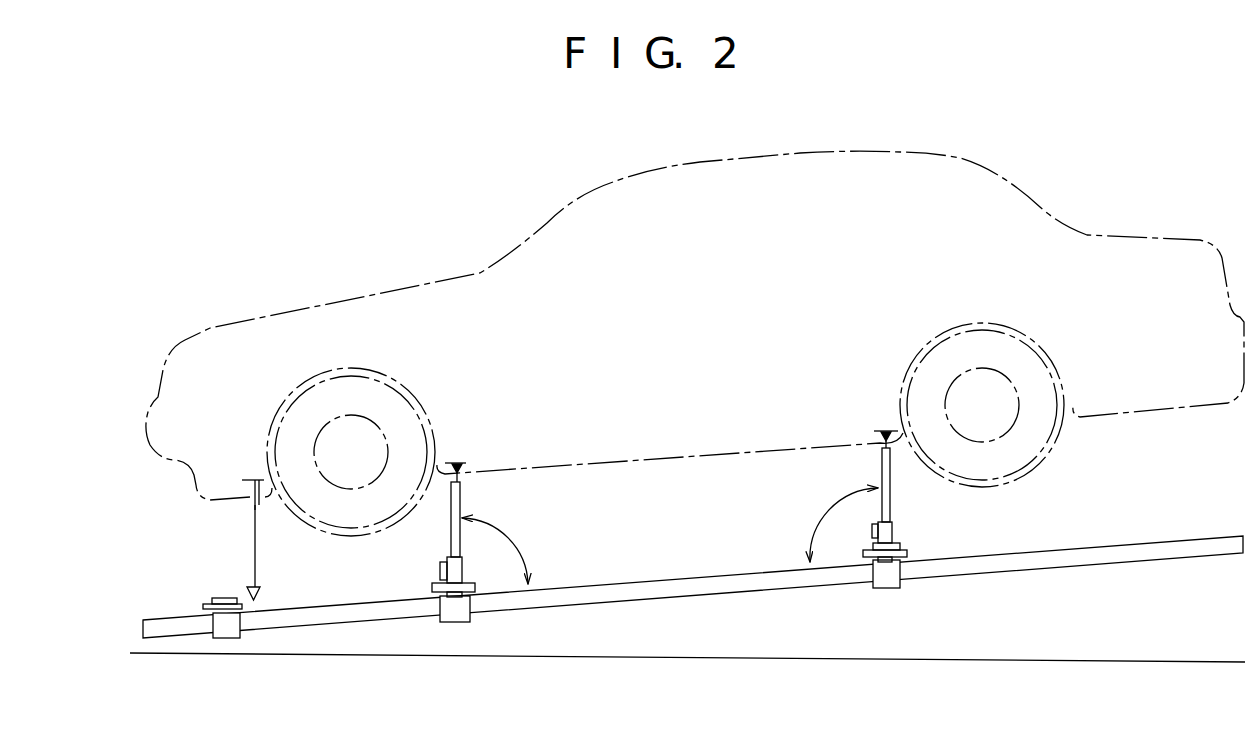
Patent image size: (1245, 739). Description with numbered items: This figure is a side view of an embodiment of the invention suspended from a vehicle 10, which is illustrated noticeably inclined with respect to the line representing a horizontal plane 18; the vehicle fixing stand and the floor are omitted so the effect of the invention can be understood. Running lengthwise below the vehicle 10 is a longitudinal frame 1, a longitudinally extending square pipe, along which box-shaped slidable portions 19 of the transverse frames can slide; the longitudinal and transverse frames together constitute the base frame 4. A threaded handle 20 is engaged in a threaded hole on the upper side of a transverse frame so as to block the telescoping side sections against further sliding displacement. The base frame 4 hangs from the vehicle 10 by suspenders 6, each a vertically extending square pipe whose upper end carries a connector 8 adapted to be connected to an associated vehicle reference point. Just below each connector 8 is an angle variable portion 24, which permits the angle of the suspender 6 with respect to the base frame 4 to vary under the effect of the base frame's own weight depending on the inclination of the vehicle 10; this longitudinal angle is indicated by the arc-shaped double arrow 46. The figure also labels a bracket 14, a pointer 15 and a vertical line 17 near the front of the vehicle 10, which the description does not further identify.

The longitudinal frame 1 is at (1173, 546).
The base frame 4 is at (482, 619).
The suspender 6 is at (449, 537).
The connector 8 is at (461, 466).
The vehicle 10 is at (612, 198).
The reference bracket 14 is at (247, 480).
The reference pointer 15 is at (261, 600).
The vertical reference line 17 is at (244, 542).
The horizontal plane 18 is at (1175, 660).
The slidable portion 19 is at (227, 628).
The threaded handle 20 is at (225, 597).
The angle variable portion 24 is at (432, 587).
The arc-shaped double arrow 46 is at (516, 547).